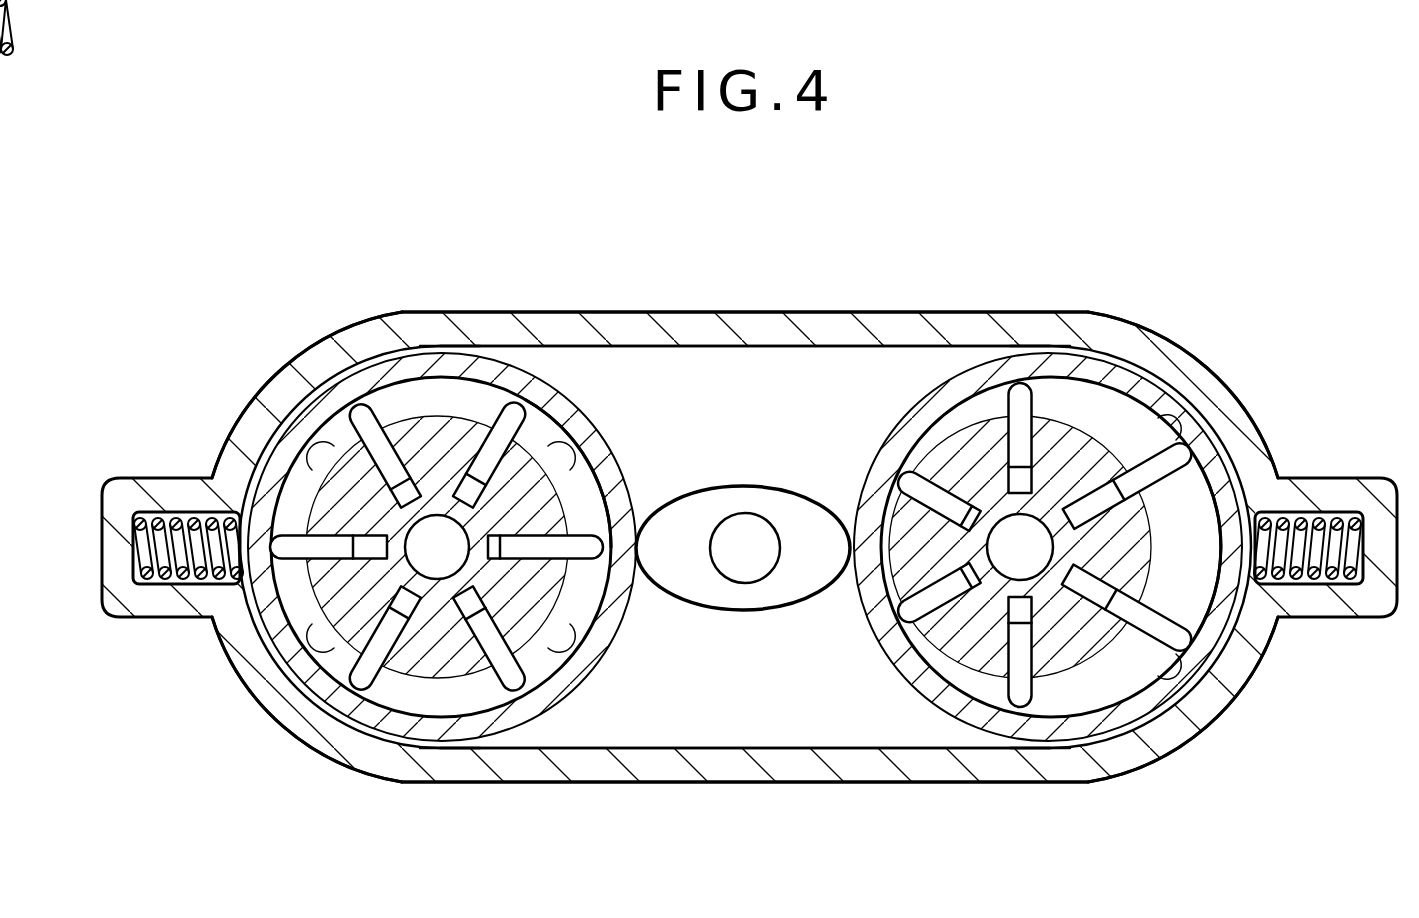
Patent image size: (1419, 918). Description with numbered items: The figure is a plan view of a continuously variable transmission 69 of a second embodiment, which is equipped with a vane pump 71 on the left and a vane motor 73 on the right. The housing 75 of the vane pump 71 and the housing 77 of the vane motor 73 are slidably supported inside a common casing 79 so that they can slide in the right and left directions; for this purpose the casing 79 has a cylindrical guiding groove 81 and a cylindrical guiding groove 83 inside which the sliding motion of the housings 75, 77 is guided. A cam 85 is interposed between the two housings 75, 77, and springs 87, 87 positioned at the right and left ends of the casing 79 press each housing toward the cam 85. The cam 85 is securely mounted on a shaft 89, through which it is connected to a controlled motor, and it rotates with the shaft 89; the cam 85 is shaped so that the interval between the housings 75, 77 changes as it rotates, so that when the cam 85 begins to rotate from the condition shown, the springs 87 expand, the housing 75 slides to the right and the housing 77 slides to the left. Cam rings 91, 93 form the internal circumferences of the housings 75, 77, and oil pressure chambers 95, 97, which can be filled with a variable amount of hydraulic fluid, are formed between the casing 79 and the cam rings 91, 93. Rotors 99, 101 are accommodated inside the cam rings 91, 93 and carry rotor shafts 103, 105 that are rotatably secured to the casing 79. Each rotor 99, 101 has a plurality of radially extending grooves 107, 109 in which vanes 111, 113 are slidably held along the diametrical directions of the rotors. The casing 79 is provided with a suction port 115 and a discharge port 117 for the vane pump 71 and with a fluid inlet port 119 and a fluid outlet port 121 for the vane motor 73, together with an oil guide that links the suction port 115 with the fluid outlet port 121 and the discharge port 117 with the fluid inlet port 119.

The continuously variable transmission 69 is at (236, 284).
The vane pump 71 is at (330, 327).
The vane motor 73 is at (1183, 327).
The housing 75 is at (563, 400).
The housing 77 is at (905, 430).
The casing 79 is at (768, 330).
The cylindrical guiding groove 81 is at (443, 347).
The cylindrical guiding groove 83 is at (1035, 347).
The cam 85 is at (717, 497).
The spring 87 is at (198, 517).
The shaft 89 is at (727, 566).
The cam ring 91 is at (589, 493).
The cam ring 93 is at (1200, 480).
The oil pressure chamber 95 is at (584, 588).
The oil pressure chamber 97 is at (1162, 597).
The rotor 99 is at (415, 652).
The rotor 101 is at (1088, 566).
The rotor shaft 103 is at (421, 558).
The rotor shaft 105 is at (1031, 569).
The radially extending groove 107 is at (507, 549).
The radially extending groove 109 is at (1008, 612).
The vane 111 is at (380, 449).
The vane 113 is at (937, 503).
The suction port 115 is at (410, 414).
The discharge port 117 is at (414, 711).
The fluid inlet port 119 is at (1078, 701).
The fluid outlet port 121 is at (1078, 436).